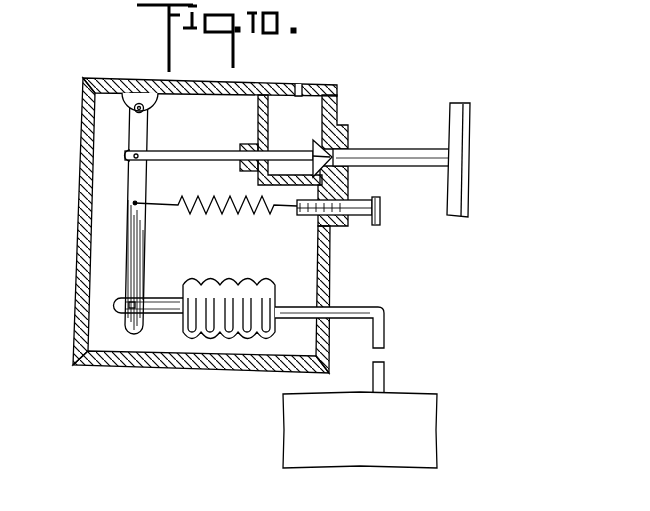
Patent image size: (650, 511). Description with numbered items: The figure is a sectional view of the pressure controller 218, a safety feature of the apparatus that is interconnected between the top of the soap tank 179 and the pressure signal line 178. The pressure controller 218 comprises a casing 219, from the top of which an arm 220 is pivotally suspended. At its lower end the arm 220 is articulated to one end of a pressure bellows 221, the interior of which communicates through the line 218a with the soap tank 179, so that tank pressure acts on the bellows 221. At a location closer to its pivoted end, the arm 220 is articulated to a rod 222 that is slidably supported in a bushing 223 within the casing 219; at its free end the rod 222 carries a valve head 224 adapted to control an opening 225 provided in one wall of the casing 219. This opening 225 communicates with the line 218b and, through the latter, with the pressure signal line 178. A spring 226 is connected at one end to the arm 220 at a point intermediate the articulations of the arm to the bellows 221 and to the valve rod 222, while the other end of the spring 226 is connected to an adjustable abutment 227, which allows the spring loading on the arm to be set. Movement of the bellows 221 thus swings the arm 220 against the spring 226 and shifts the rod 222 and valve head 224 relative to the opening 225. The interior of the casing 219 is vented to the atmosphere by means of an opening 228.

The pressure signal line 178 is at (472, 128).
The soap tank 179 is at (430, 422).
The pressure controller 218 is at (72, 244).
The line 218a is at (377, 312).
The line 218b is at (405, 148).
The casing 219 is at (81, 140).
The arm 220 is at (138, 249).
The pressure bellows 221 is at (227, 287).
The rod 222 is at (203, 152).
The bushing 223 is at (252, 172).
The valve head 224 is at (323, 142).
The opening 225 is at (349, 168).
The spring 226 is at (223, 213).
The adjustable abutment 227 is at (355, 216).
The opening 228 is at (299, 84).